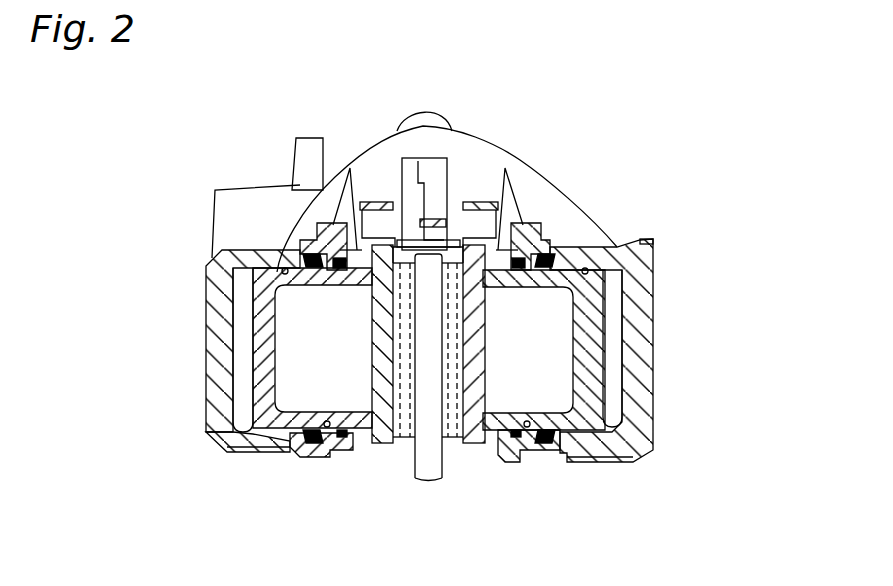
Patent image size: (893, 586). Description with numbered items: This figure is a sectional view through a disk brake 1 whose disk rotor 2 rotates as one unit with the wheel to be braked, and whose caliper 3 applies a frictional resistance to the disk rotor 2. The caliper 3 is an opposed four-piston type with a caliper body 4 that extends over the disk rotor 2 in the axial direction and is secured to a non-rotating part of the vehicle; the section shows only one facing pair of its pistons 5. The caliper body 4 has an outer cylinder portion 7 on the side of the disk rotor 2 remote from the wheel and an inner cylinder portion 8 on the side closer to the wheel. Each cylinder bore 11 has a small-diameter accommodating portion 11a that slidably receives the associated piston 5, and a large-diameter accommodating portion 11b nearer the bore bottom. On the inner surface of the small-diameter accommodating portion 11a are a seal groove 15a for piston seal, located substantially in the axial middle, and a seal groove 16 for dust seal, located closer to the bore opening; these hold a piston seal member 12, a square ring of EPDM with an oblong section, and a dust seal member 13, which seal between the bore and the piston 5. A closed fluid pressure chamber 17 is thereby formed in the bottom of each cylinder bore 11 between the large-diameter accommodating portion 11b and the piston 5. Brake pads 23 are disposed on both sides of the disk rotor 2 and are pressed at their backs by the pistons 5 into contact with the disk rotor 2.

The disk brake 1 is at (431, 322).
The disk rotor 2 is at (428, 455).
The caliper 3 is at (615, 212).
The caliper body 4 is at (651, 238).
The piston 5 is at (287, 418).
The outer cylinder portion 7 is at (205, 398).
The inner cylinder portion 8 is at (656, 396).
The cylinder bore 11 is at (279, 268).
The small-diameter accommodating portion 11a is at (327, 427).
The large-diameter accommodating portion 11b is at (250, 449).
The piston seal member 12 is at (304, 252).
The dust seal member 13 is at (340, 256).
The seal groove for piston seal 15a is at (297, 443).
The seal groove for dust seal 16 is at (353, 445).
The fluid pressure chamber 17 is at (243, 332).
The brake pad 23 is at (402, 445).